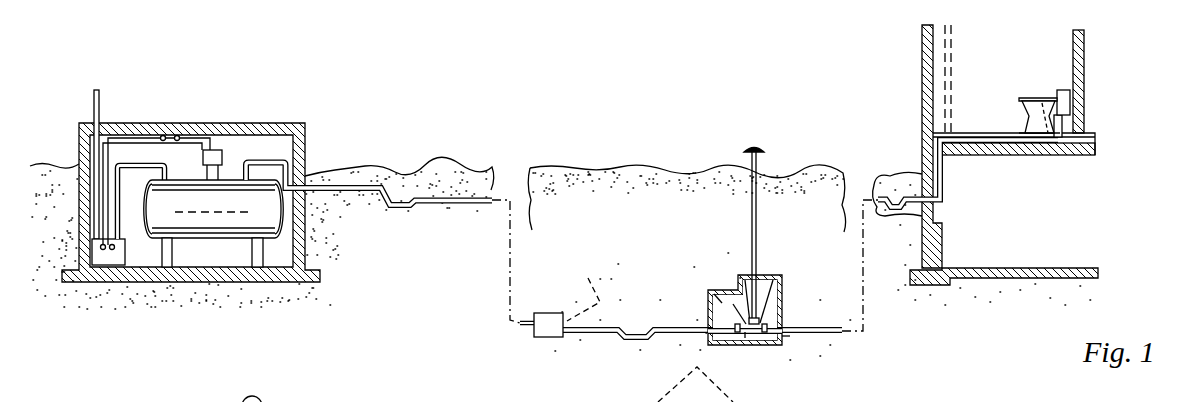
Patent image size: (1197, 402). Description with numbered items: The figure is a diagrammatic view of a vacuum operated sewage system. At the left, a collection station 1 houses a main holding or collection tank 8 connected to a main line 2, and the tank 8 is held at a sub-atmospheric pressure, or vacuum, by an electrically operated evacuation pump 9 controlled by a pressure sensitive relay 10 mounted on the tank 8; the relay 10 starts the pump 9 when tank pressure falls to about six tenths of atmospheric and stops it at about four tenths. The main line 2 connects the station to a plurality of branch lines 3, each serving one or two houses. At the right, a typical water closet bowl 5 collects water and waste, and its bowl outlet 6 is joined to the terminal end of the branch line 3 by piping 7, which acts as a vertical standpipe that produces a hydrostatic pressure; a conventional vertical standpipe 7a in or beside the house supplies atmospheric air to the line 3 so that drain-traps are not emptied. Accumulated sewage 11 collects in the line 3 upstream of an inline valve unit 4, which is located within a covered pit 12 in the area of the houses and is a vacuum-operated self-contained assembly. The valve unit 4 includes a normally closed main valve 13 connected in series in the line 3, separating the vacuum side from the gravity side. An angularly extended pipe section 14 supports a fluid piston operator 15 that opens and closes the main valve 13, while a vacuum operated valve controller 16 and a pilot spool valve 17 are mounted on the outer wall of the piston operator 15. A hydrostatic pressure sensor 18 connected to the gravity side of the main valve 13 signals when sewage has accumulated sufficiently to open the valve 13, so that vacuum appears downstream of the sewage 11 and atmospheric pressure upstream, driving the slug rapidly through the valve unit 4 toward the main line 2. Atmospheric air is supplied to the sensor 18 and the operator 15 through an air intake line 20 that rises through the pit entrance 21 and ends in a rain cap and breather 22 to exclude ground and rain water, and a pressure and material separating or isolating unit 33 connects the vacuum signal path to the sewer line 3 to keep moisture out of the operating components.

The collection station 1 is at (257, 118).
The main line 2 is at (397, 208).
The branch line 3 is at (556, 312).
The inline valve unit 4 is at (762, 346).
The water closet bowl 5 is at (1040, 97).
The bowl outlet 6 is at (1057, 142).
The piping 7 is at (942, 190).
The vertical standpipe 7a is at (946, 52).
The collection tank 8 is at (212, 228).
The evacuation pump 9 is at (108, 257).
The pressure sensitive relay 10 is at (220, 157).
The sewage 11 is at (886, 174).
The covered pit 12 is at (782, 302).
The main valve 13 is at (747, 345).
The pipe section 14 is at (715, 293).
The fluid piston operator 15 is at (748, 288).
The valve controller 16 is at (767, 292).
The pilot spool valve 17 is at (783, 280).
The hydrostatic pressure sensor 18 is at (783, 338).
The air intake line 20 is at (752, 212).
The pit entrance 21 is at (762, 283).
The rain cap and breather 22 is at (758, 148).
The pressure and material separating unit 33 is at (738, 322).